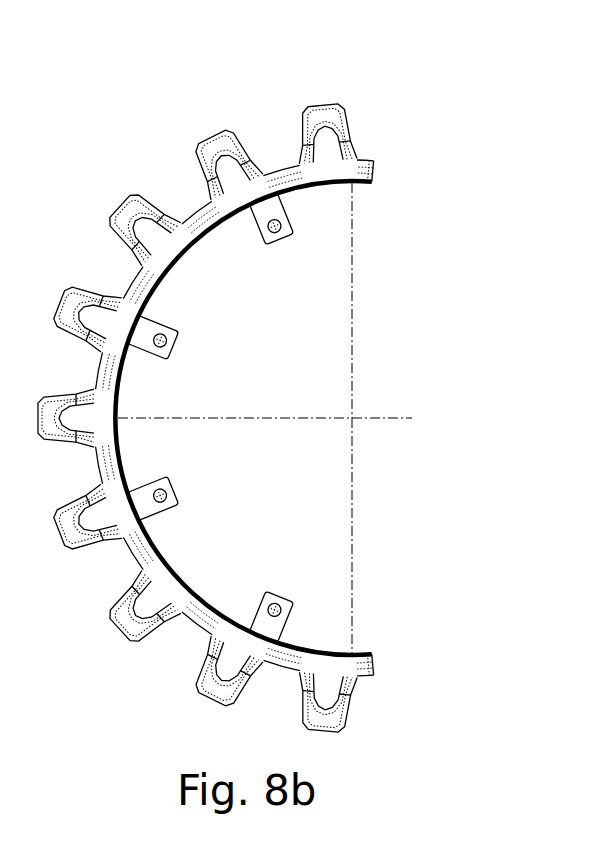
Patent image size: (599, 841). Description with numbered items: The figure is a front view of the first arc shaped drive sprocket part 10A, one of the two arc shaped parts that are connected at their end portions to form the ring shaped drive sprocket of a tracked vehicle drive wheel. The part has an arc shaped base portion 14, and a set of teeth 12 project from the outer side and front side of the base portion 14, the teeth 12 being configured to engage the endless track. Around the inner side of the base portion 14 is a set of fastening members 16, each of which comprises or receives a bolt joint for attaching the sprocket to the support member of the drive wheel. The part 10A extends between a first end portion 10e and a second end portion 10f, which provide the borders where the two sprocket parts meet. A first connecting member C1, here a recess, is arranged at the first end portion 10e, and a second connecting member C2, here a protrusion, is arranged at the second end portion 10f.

The first arc shaped drive sprocket part 10A is at (116, 157).
The teeth 12 is at (208, 140).
The base portion 14 is at (90, 368).
The fastening members 16 is at (190, 345).
The first end portion 10e is at (376, 165).
The second end portion 10f is at (376, 672).
The first connecting member C1 is at (376, 186).
The second connecting member C2 is at (376, 658).